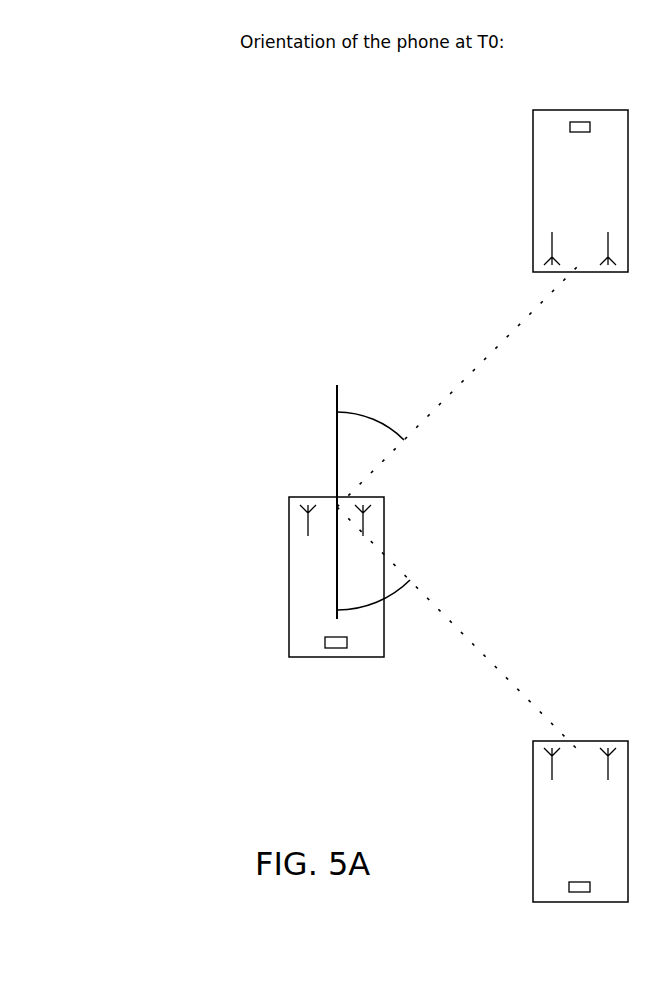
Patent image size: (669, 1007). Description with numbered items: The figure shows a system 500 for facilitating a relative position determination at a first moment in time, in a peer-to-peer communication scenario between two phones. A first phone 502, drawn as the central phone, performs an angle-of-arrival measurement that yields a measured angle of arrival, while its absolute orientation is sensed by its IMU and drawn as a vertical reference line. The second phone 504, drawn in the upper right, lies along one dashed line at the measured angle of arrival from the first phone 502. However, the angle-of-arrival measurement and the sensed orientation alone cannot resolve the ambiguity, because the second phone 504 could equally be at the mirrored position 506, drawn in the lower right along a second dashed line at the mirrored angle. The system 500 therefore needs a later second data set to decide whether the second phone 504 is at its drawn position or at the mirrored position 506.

The system 500 is at (378, 226).
The first phone 502 is at (292, 558).
The second phone 504 is at (535, 187).
The mirrored position 506 is at (537, 810).